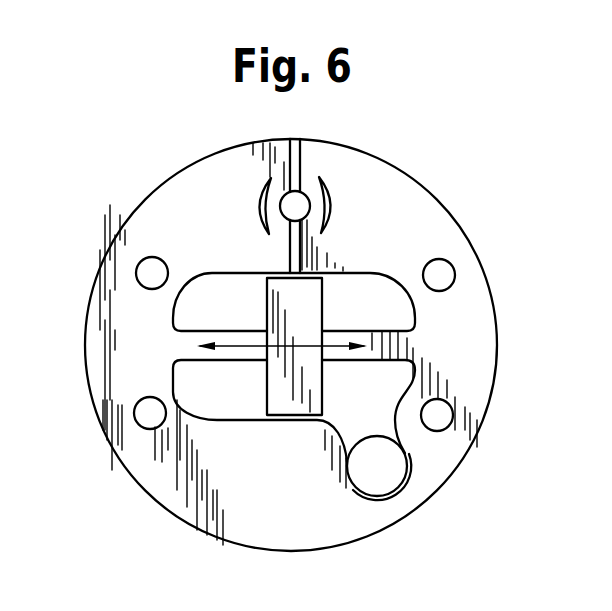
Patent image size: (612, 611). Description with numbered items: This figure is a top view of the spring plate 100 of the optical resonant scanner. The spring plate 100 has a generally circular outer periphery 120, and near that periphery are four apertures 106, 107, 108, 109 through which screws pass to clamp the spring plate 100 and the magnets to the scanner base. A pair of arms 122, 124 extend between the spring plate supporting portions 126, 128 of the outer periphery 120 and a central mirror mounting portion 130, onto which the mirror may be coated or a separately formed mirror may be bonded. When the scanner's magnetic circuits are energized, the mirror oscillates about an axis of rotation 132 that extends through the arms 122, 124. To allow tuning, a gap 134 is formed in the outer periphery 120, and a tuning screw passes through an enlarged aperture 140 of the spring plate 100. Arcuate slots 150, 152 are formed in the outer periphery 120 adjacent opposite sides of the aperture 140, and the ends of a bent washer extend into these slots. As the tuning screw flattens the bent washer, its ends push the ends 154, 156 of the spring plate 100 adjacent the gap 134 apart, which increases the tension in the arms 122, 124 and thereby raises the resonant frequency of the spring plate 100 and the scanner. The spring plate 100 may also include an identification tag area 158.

The spring plate 100 is at (408, 190).
The aperture 106 is at (148, 428).
The aperture 107 is at (447, 426).
The aperture 108 is at (142, 273).
The aperture 109 is at (445, 275).
The outer periphery 120 is at (337, 535).
The arm 122 is at (175, 322).
The arm 124 is at (373, 332).
The spring plate supporting portion 126 is at (123, 354).
The spring plate supporting portion 128 is at (477, 354).
The mirror mounting portion 130 is at (285, 403).
The axis of rotation 132 is at (222, 348).
The gap 134 is at (297, 130).
The enlarged aperture 140 is at (312, 247).
The left arcuate slot 150 is at (258, 205).
The arcuate slot 152 is at (330, 194).
The end of spring plate 154 is at (280, 150).
The end of spring plate 156 is at (312, 162).
The identification tag area 158 is at (393, 467).